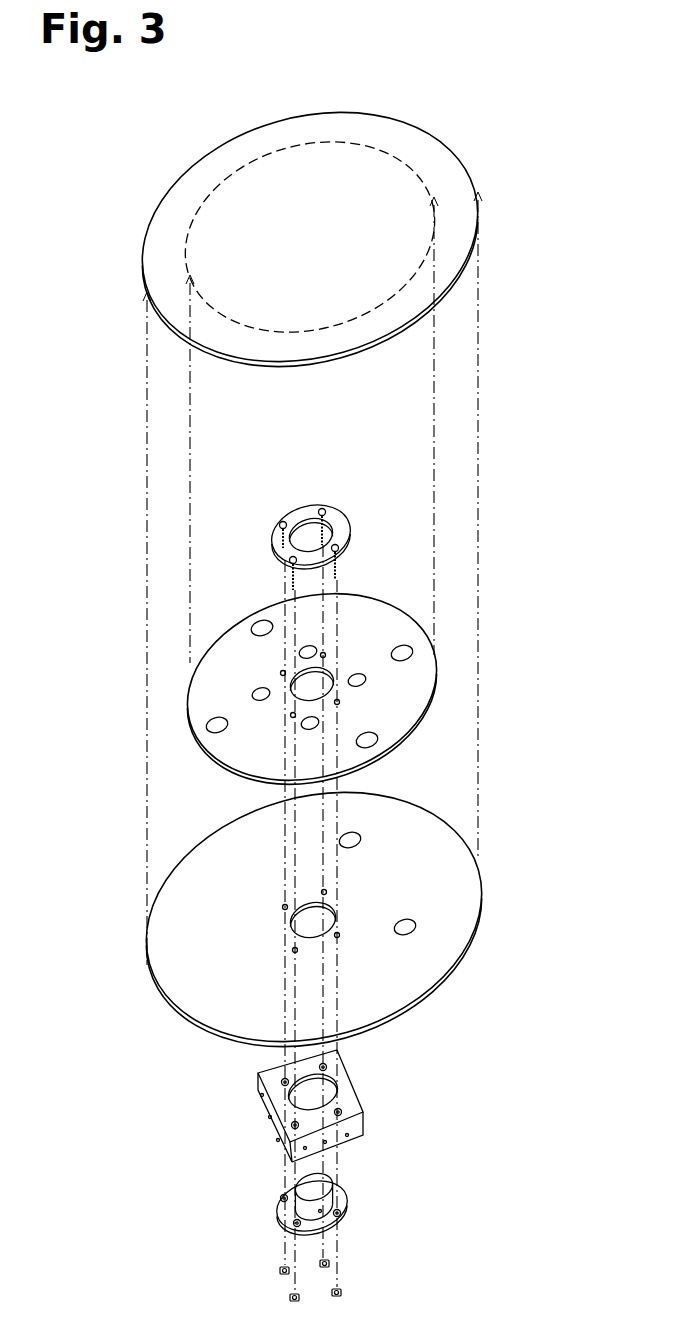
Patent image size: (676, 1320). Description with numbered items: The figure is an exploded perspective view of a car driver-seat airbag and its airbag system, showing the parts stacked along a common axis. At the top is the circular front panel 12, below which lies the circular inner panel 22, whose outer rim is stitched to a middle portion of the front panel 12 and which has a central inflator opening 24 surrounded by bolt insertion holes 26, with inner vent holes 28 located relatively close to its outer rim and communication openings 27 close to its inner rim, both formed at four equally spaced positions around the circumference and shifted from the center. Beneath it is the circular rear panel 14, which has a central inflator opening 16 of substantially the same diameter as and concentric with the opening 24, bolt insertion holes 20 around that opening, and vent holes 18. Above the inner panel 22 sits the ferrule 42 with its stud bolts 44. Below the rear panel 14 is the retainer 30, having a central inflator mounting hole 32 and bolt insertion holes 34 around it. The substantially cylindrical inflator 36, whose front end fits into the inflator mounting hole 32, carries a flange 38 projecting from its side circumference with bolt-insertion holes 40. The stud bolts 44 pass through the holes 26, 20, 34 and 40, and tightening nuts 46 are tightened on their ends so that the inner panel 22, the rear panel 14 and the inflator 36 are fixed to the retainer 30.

The front panel 12 is at (412, 137).
The rear panel 14 is at (177, 990).
The inflator opening 16 is at (303, 925).
The vent holes 18 is at (362, 837).
The bolt insertion holes 20 is at (282, 907).
The inner panel 22 is at (427, 663).
The inflator opening 24 is at (291, 692).
The bolt insertion holes 26 is at (281, 674).
The communication openings 27 is at (367, 680).
The inner vent holes 28 is at (400, 645).
The retainer 30 is at (362, 1098).
The inflator mounting hole 32 is at (313, 1092).
The bolt insertion holes 34 is at (343, 1111).
The inflator 36 is at (334, 1178).
The flange 38 is at (348, 1195).
The bolt-insertion holes 40 is at (281, 1198).
The ferrule 42 is at (340, 532).
The stud bolts 44 is at (338, 571).
The tightening nuts 46 is at (290, 1297).